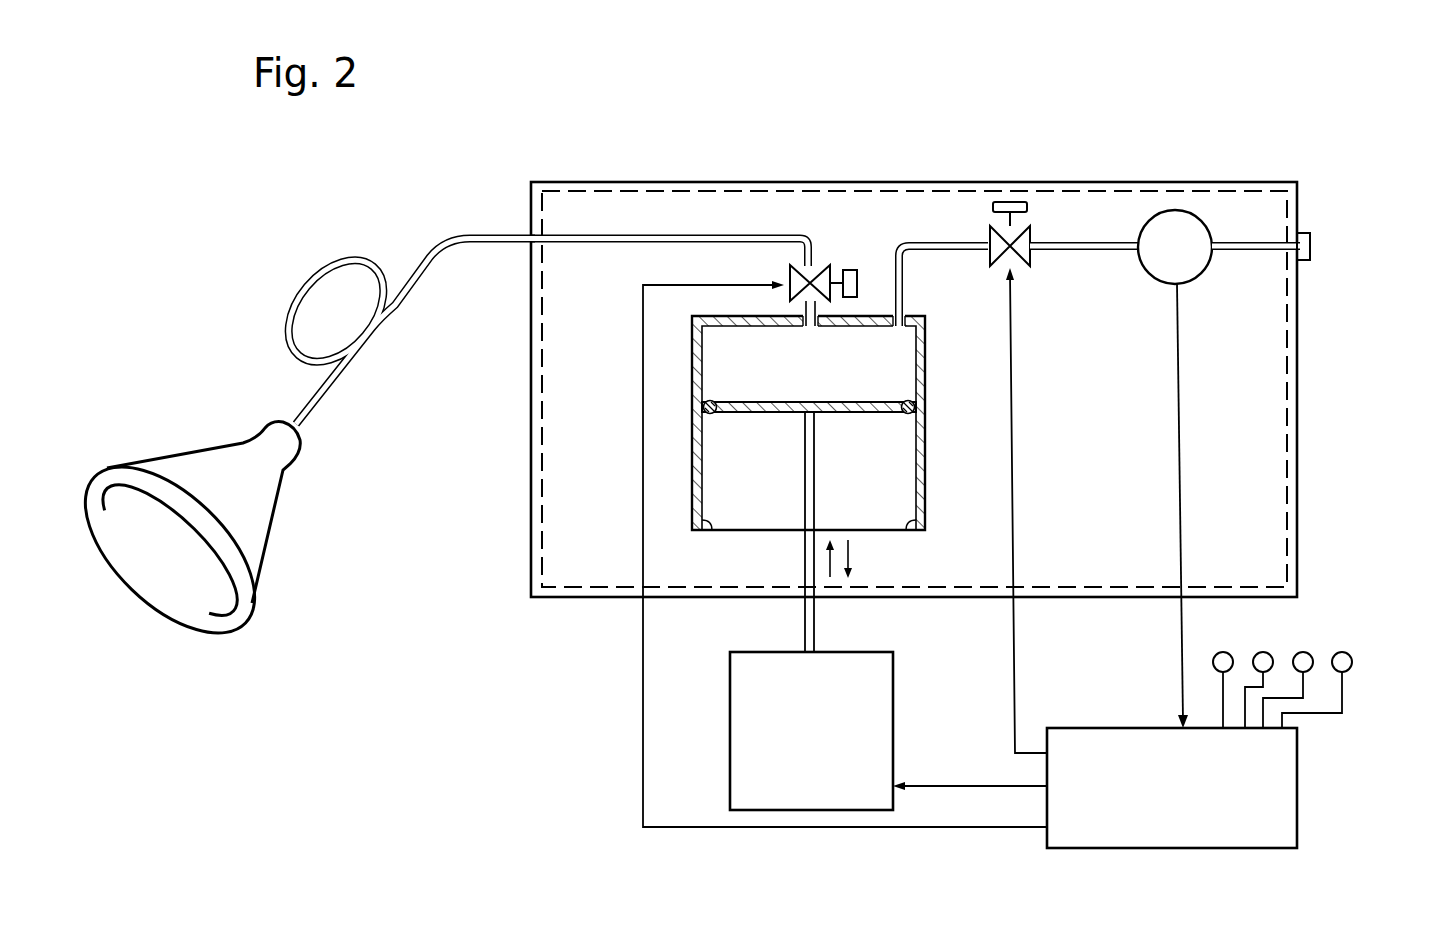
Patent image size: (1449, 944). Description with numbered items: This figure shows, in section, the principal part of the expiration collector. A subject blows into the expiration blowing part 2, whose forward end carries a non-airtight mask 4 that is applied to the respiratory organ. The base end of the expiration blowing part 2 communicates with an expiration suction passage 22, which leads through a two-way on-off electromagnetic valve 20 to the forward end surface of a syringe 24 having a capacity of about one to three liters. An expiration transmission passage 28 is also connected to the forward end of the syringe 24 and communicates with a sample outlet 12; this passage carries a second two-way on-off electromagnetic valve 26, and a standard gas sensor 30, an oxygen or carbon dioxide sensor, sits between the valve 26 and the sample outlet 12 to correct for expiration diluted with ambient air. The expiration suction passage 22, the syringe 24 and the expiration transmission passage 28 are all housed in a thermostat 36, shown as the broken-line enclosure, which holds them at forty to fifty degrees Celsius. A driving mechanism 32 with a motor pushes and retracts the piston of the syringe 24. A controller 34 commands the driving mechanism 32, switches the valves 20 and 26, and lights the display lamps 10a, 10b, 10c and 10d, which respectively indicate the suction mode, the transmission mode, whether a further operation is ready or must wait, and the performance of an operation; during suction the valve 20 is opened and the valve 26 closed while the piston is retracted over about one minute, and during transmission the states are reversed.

The expiration blowing part 2 is at (307, 298).
The non-airtight mask 4 is at (176, 455).
The display lamp 10a is at (1216, 653).
The display lamp 10b is at (1264, 652).
The display lamp 10c is at (1311, 653).
The display lamp 10d is at (1352, 660).
The sample outlet 12 is at (1307, 235).
The two-way on-off electromagnetic valve 20 is at (830, 265).
The expiration suction passage 22 is at (692, 233).
The syringe 24 is at (926, 343).
The two-way on-off electromagnetic valve 26 is at (1035, 233).
The expiration transmission passage 28 is at (947, 247).
The standard gas sensor 30 is at (1176, 210).
The driving mechanism 32 is at (893, 673).
The controller 34 is at (1298, 770).
The thermostat 36 is at (1288, 352).